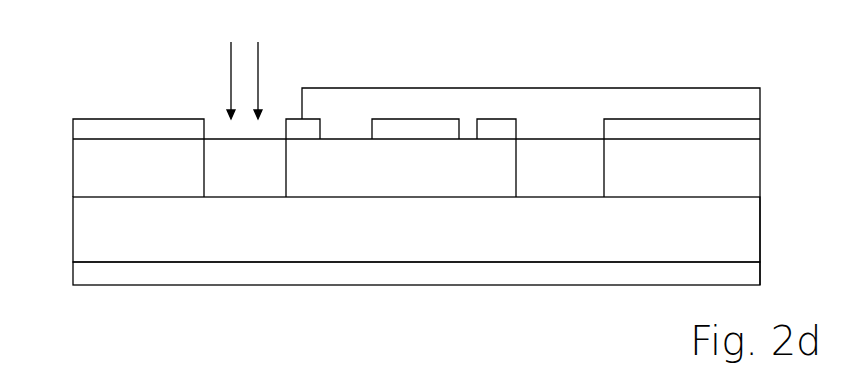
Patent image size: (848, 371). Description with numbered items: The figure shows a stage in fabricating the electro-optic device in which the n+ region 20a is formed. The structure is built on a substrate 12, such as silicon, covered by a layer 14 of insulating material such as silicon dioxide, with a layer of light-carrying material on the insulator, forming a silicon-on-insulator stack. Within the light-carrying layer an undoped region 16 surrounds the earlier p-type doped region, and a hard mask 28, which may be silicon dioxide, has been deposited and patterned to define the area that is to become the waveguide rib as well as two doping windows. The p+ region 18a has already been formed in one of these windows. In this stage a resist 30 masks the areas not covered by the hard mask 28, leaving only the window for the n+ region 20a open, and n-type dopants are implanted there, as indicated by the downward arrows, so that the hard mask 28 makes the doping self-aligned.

The substrate 12 is at (87, 275).
The layer of insulating material 14 is at (87, 235).
The undoped region 16 is at (127, 163).
The hard mask 28 is at (182, 127).
The n+ region 20a is at (266, 150).
The resist 30 is at (512, 98).
The p+ region 18a is at (556, 143).